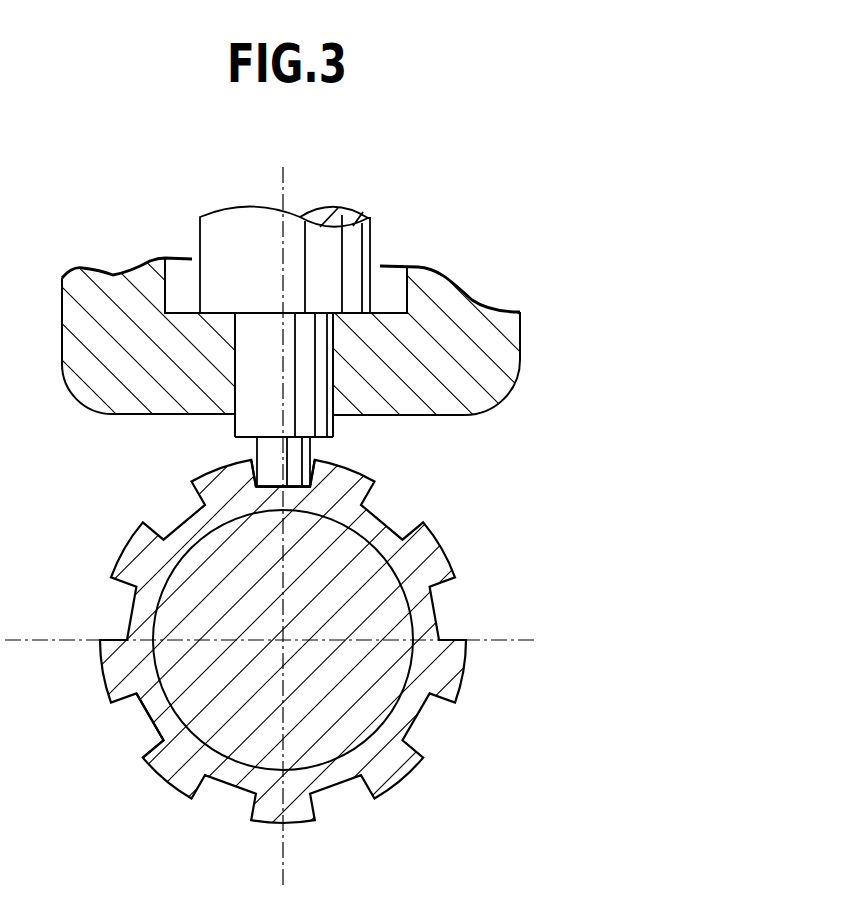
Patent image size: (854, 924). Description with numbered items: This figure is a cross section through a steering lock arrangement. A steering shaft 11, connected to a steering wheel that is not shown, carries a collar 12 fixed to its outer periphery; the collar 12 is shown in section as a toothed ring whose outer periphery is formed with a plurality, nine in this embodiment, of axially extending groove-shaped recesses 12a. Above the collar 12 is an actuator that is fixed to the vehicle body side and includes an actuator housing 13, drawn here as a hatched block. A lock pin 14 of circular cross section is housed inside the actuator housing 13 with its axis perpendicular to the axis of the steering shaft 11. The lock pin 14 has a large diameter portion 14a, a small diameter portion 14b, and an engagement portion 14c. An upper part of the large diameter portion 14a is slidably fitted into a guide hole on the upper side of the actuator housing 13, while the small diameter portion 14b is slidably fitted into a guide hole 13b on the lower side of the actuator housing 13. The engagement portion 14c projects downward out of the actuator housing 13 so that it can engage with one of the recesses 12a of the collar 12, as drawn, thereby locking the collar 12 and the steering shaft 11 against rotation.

The steering shaft 11 is at (437, 612).
The collar 12 is at (463, 673).
The recesses 12a is at (316, 463).
The actuator housing 13 is at (522, 345).
The guide hole 13b is at (237, 347).
The lock pin 14 is at (300, 302).
The large diameter portion 14a is at (243, 232).
The small diameter portion 14b is at (325, 375).
The engagement portion 14c is at (256, 464).